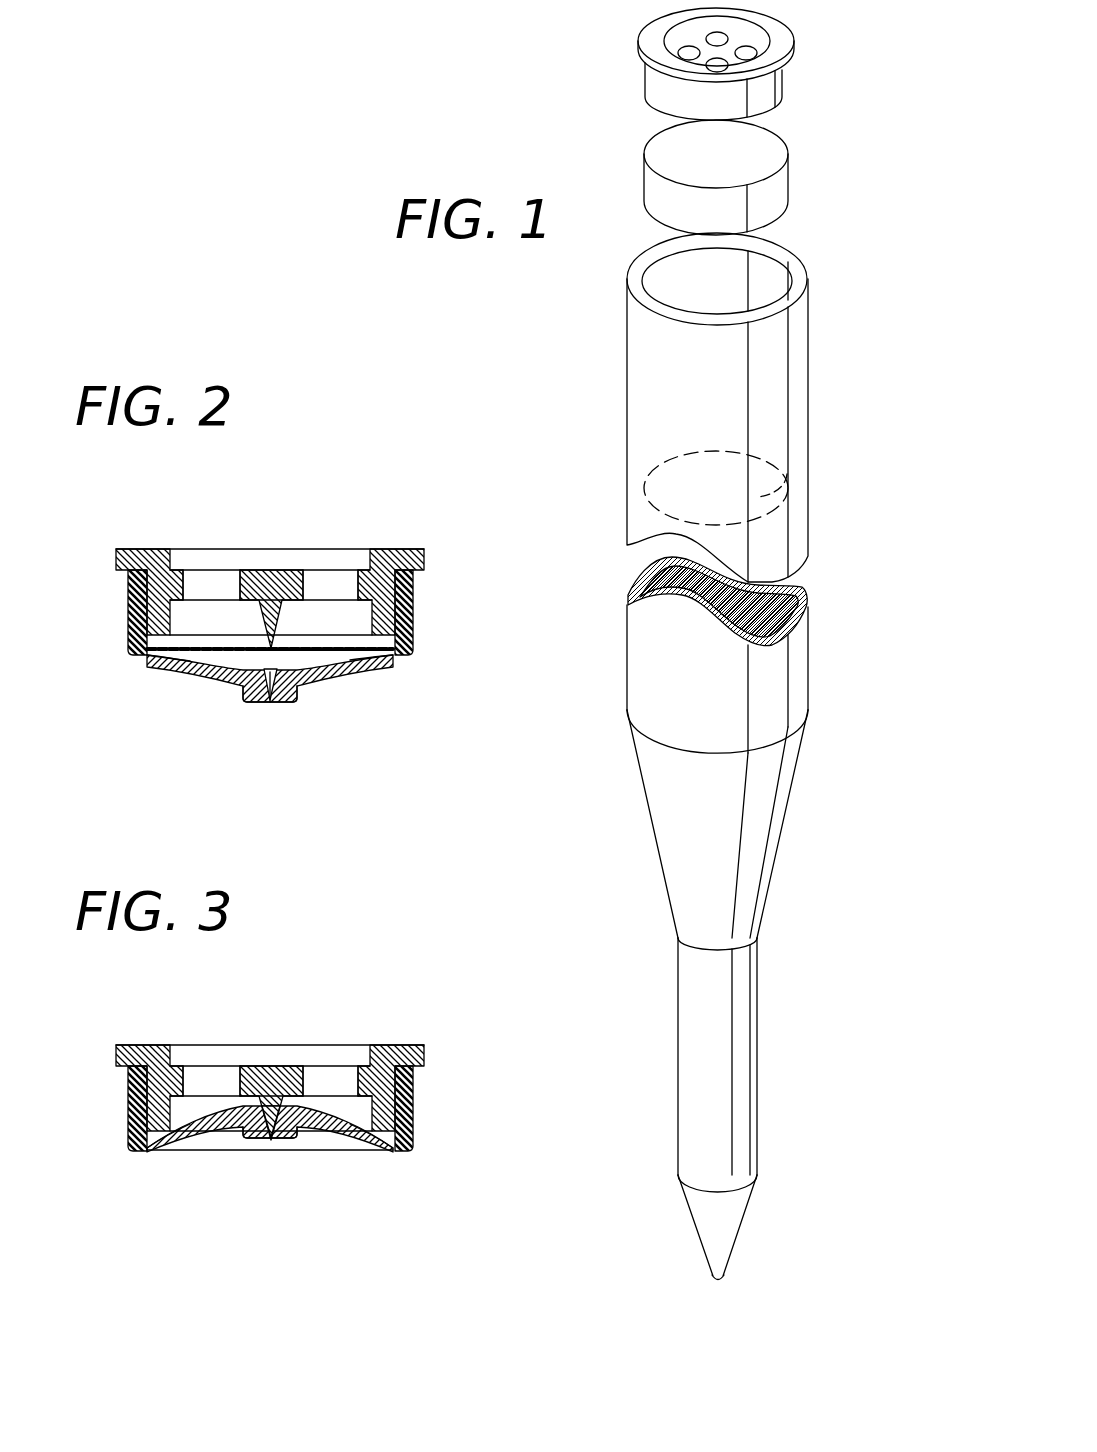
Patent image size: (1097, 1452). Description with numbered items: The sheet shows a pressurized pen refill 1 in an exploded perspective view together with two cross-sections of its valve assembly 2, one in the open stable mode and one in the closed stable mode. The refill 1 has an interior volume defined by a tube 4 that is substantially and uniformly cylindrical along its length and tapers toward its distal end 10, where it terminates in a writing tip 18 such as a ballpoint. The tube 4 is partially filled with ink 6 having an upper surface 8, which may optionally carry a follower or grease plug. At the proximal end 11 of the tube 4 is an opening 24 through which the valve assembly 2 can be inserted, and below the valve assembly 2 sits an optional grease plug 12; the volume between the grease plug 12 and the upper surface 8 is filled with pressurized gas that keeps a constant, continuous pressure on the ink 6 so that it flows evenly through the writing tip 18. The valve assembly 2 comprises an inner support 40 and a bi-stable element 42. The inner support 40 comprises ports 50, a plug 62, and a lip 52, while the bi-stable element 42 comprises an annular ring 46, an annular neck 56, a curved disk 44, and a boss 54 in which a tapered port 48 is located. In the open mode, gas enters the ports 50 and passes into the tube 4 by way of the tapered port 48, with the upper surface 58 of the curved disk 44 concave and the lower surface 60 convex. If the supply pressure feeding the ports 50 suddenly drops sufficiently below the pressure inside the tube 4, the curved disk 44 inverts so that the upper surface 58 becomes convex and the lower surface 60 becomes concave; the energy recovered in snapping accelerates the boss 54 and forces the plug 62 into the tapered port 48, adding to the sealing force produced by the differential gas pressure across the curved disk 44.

In FIG. 1, the refill 1 is at (826, 1225).
In FIG. 1, the valve assembly 2 is at (830, 42).
In FIG. 2, the valve assembly 2 is at (392, 485).
In FIG. 3, the valve assembly 2 is at (392, 981).
In FIG. 1, the tube 4 is at (808, 648).
In FIG. 1, the ink 6 is at (787, 583).
In FIG. 1, the upper surface 8 is at (788, 462).
In FIG. 1, the distal end 10 is at (757, 1033).
In FIG. 1, the proximal end 11 is at (840, 208).
In FIG. 1, the grease plug 12 is at (785, 145).
In FIG. 1, the writing tip 18 is at (714, 1280).
In FIG. 1, the opening 24 is at (753, 282).
In FIG. 2, the inner support 40 is at (429, 549).
In FIG. 3, the inner support 40 is at (429, 1045).
In FIG. 2, the bi-stable element 42 is at (417, 617).
In FIG. 3, the bi-stable element 42 is at (417, 1113).
In FIG. 2, the curved disk 44 is at (155, 673).
In FIG. 3, the curved disk 44 is at (185, 1145).
In FIG. 2, the annular ring 46 is at (128, 612).
In FIG. 3, the annular ring 46 is at (128, 1108).
In FIG. 2, the tapered port 48 is at (270, 702).
In FIG. 3, the tapered port 48 is at (282, 1133).
In FIG. 2, the ports 50 is at (215, 580).
In FIG. 3, the ports 50 is at (215, 1076).
In FIG. 2, the lip 52 is at (117, 568).
In FIG. 3, the lip 52 is at (117, 1064).
In FIG. 2, the boss 54 is at (280, 702).
In FIG. 3, the boss 54 is at (288, 1143).
In FIG. 2, the annular neck 56 is at (140, 652).
In FIG. 3, the annular neck 56 is at (145, 1148).
In FIG. 2, the upper surface 58 is at (330, 685).
In FIG. 3, the upper surface 58 is at (323, 1130).
In FIG. 2, the lower surface 60 is at (370, 677).
In FIG. 3, the lower surface 60 is at (363, 1153).
In FIG. 2, the plug 62 is at (267, 628).
In FIG. 3, the plug 62 is at (263, 1138).